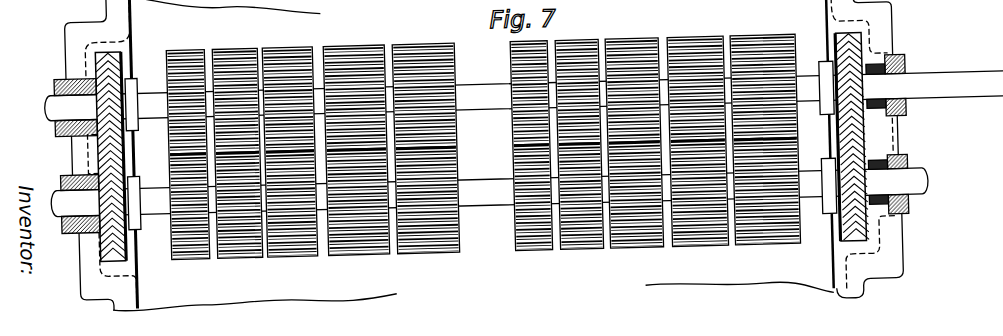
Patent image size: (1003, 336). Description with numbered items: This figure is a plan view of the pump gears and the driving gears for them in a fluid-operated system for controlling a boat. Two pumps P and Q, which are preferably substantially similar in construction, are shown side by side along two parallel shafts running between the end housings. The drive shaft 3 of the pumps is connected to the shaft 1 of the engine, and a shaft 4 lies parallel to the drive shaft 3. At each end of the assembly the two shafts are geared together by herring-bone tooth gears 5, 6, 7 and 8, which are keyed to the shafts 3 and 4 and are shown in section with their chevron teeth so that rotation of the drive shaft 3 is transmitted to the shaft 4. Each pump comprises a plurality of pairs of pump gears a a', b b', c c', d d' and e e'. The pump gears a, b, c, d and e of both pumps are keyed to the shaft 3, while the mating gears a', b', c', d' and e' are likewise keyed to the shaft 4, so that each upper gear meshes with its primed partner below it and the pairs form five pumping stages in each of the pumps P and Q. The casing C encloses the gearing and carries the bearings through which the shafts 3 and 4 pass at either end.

The engine shaft 1 is at (903, 196).
The drive shaft 3 is at (63, 97).
The shaft 4 is at (60, 196).
The herring-bone tooth gear 5 is at (864, 129).
The herring-bone tooth gear 6 is at (870, 172).
The herring-bone tooth gear 7 is at (100, 125).
The herring-bone tooth gear 8 is at (100, 160).
The casing C is at (73, 31).
The pump Q is at (312, 133).
The pump P is at (654, 125).
The pump gear a is at (349, 83).
The pump gear b is at (407, 84).
The pump gear c is at (457, 83).
The pump gear d is at (525, 81).
The pump gear e is at (583, 80).
The pump gear a' is at (351, 219).
The pump gear b' is at (405, 220).
The pump gear c' is at (463, 215).
The pump gear d' is at (524, 214).
The pump gear e' is at (586, 212).